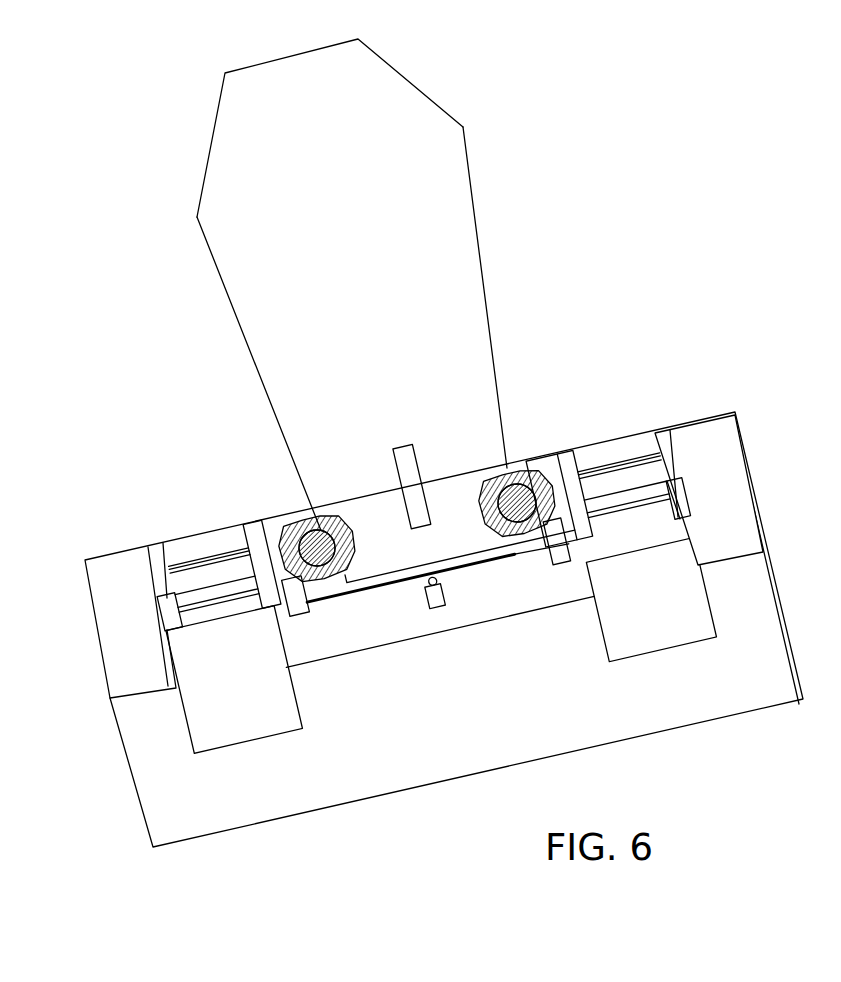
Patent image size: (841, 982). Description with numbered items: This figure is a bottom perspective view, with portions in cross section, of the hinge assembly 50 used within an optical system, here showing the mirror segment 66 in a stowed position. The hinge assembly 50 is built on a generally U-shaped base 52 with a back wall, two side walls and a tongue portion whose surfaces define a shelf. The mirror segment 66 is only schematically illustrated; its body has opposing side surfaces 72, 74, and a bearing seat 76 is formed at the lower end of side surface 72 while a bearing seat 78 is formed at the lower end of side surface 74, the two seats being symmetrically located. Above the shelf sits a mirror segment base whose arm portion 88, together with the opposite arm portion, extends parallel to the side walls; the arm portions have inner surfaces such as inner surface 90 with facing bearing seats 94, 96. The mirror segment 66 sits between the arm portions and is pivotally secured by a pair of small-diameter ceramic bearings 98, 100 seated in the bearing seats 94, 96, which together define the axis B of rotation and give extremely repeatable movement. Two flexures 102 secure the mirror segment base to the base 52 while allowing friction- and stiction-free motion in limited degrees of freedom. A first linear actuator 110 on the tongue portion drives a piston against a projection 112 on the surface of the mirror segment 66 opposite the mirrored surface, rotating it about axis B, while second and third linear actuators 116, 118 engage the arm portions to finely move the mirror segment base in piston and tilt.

The hinge assembly 50 is at (630, 258).
The base 52 is at (198, 840).
The mirror segment 66 is at (420, 90).
The side surface 72 is at (230, 305).
The side surface 74 is at (478, 222).
The bearing seat 76 is at (341, 577).
The bearing seat 78 is at (517, 483).
The arm portion 88 is at (544, 452).
The inner surface 90 is at (295, 523).
The bearing seat 94 is at (305, 520).
The bearing seat 96 is at (557, 543).
The bearing 98 is at (327, 562).
The bearing 100 is at (511, 540).
The flexure 102 is at (187, 572).
The first linear actuator 110 is at (435, 607).
The projection 112 is at (403, 447).
The second linear actuator 116 is at (293, 603).
The third linear actuator 118 is at (556, 553).
The axis B is at (237, 562).